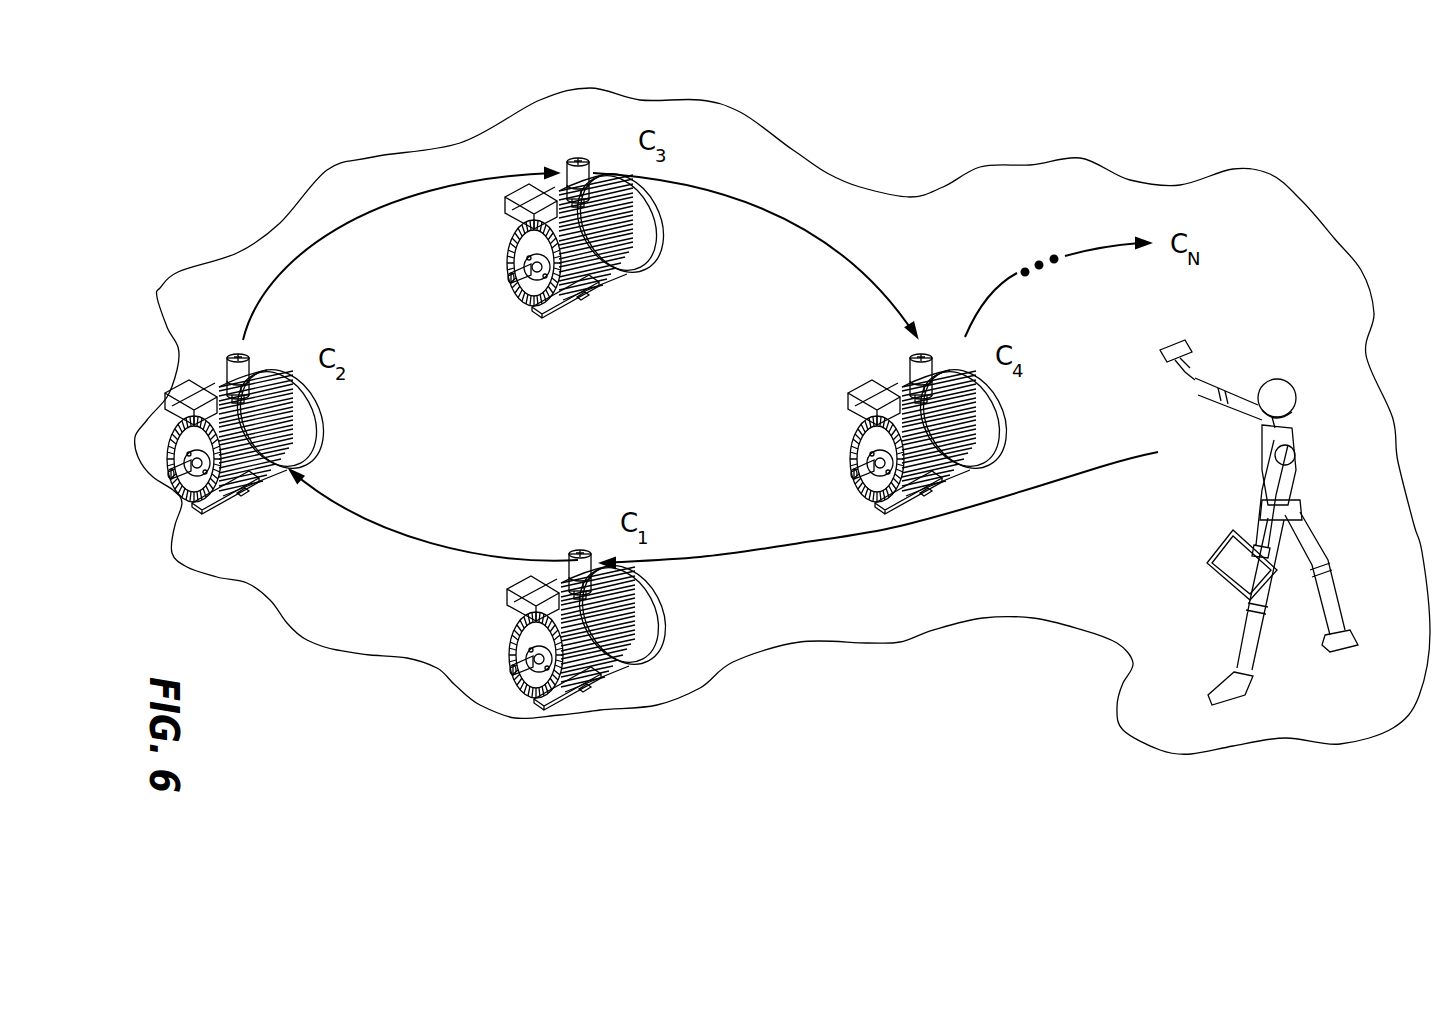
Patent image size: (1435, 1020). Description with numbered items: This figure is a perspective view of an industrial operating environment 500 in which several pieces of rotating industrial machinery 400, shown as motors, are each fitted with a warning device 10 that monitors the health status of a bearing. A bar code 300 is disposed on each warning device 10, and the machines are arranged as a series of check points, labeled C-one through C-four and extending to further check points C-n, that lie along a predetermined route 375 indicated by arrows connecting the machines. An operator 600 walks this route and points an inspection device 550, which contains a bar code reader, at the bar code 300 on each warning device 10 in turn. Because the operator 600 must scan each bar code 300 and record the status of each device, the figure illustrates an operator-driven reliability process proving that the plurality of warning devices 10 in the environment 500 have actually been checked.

The warning device 10 is at (635, 182).
The bar code 300 is at (578, 160).
The rotating industrial machinery 400 is at (506, 263).
The predetermined route 375 is at (1020, 503).
The operating environment 500 is at (1292, 190).
The inspection device 550 is at (1201, 345).
The operator 600 is at (1313, 478).